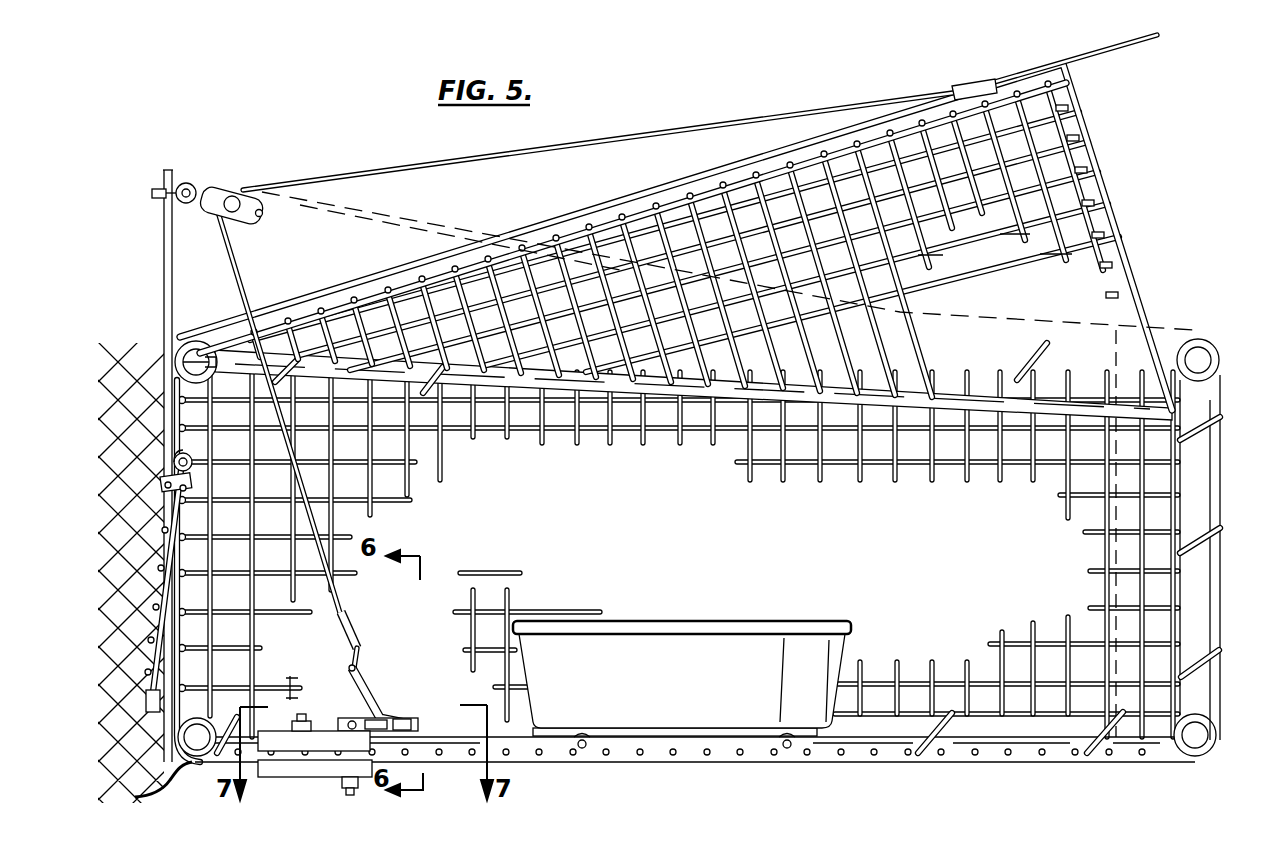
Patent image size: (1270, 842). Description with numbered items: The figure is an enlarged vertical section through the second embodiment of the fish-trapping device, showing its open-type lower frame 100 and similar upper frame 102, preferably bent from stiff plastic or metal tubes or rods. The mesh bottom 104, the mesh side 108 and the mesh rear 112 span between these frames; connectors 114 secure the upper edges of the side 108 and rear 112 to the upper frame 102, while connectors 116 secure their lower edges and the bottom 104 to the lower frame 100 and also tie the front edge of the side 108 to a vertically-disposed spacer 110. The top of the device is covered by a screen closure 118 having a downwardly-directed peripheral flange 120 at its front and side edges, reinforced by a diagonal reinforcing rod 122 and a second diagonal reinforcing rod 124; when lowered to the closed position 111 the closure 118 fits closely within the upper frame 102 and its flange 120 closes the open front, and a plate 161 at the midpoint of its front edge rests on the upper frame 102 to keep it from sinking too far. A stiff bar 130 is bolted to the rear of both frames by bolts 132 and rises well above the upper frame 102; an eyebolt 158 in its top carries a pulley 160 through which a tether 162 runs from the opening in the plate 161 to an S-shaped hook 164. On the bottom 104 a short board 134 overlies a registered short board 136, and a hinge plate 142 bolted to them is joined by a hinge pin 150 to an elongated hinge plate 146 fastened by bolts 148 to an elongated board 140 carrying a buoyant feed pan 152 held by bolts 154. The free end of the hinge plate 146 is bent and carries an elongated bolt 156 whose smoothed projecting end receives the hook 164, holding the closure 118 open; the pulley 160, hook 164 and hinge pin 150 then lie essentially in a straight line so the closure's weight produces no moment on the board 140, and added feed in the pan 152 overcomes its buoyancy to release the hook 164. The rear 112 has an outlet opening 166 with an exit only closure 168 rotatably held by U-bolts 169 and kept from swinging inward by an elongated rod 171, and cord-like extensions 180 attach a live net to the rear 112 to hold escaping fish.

The lower frame 100 is at (193, 773).
The upper frame 102 is at (337, 370).
The bottom 104 is at (880, 762).
The side 108 is at (805, 480).
The vertically-disposed spacer 110 is at (1215, 500).
The closed position 111 is at (1100, 549).
The rear 112 is at (172, 462).
The connector 114 is at (1020, 350).
The connector 116 is at (935, 740).
The closure 118 is at (620, 201).
The peripheral flange 120 is at (1105, 200).
The reinforcing rod 122 is at (560, 235).
The reinforcing rod 124 is at (763, 153).
The stiff bar 130 is at (165, 240).
The bolt 132 is at (162, 343).
The short board 134 is at (300, 720).
The short board 136 is at (285, 777).
The elongated board 140 is at (652, 750).
The hinge plate 142 is at (360, 731).
The elongated hinge plate 146 is at (410, 718).
The bolt 148 is at (420, 712).
The hinge pin 150 is at (430, 695).
The feed pan 152 is at (690, 648).
The bolt 154 is at (582, 750).
The elongated bolt 156 is at (375, 670).
The eyebolt 158 is at (188, 182).
The pulley 160 is at (243, 222).
The plate 161 is at (1138, 52).
The tether 162 is at (472, 222).
The S-shaped hook 164 is at (358, 648).
The outlet opening 166 is at (175, 592).
The exit only closure 168 is at (162, 567).
The U-bolt 169 is at (160, 485).
The elongated rod 171 is at (155, 690).
The cord-like extension 180 is at (182, 400).